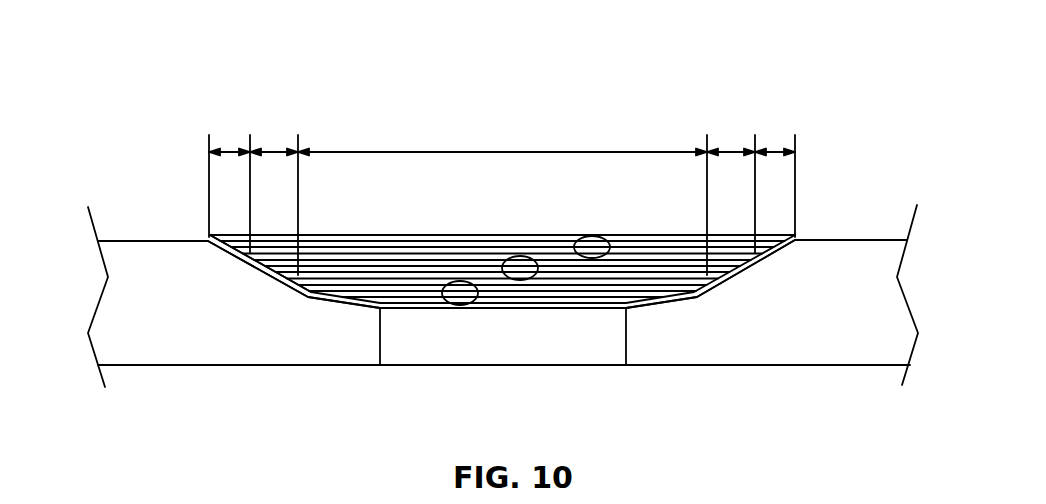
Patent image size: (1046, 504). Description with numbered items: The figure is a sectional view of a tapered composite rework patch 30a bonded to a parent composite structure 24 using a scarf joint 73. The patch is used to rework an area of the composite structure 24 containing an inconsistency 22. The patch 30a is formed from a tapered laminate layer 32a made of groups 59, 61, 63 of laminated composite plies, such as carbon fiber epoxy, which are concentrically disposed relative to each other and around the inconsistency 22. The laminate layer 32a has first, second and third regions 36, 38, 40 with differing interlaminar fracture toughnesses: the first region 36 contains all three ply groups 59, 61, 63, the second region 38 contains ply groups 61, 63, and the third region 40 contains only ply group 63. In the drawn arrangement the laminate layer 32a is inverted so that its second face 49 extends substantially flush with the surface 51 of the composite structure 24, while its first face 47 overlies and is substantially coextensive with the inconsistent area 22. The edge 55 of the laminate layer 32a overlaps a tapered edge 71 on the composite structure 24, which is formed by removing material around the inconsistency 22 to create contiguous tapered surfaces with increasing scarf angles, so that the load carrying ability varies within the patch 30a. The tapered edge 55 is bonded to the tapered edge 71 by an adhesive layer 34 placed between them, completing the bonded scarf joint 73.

The inconsistency 22 is at (442, 368).
The composite structure 24 is at (252, 347).
The tapered composite rework patch 30a is at (595, 137).
The tapered laminate layer 32a is at (458, 230).
The adhesive layer 34 is at (233, 262).
The first region 36 is at (502, 150).
The second region 38 is at (272, 150).
The third region 40 is at (228, 150).
The first face 47 is at (582, 312).
The second face 49 is at (535, 235).
The surface 51 is at (172, 238).
The edge 55 is at (257, 285).
The group of laminated composite plies 59 is at (458, 310).
The group of laminated composite plies 61 is at (518, 257).
The group of laminated composite plies 63 is at (585, 236).
The tapered edge 71 is at (285, 297).
The scarf joint 73 is at (817, 222).